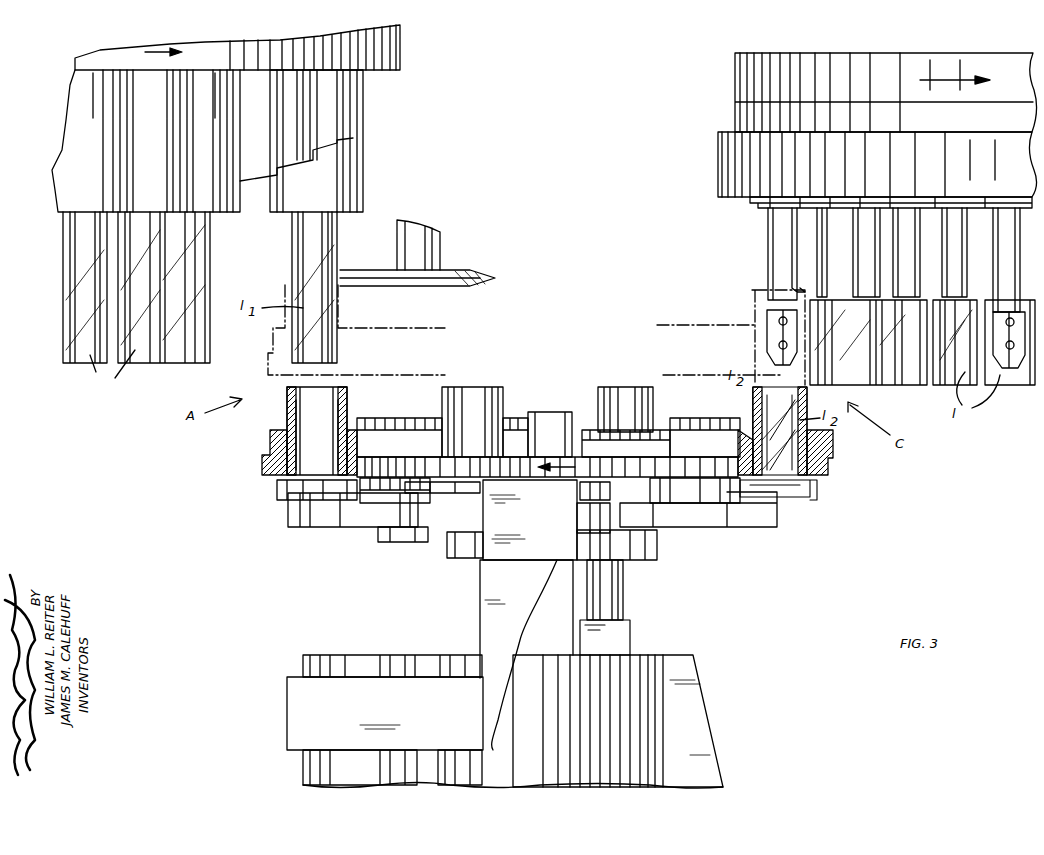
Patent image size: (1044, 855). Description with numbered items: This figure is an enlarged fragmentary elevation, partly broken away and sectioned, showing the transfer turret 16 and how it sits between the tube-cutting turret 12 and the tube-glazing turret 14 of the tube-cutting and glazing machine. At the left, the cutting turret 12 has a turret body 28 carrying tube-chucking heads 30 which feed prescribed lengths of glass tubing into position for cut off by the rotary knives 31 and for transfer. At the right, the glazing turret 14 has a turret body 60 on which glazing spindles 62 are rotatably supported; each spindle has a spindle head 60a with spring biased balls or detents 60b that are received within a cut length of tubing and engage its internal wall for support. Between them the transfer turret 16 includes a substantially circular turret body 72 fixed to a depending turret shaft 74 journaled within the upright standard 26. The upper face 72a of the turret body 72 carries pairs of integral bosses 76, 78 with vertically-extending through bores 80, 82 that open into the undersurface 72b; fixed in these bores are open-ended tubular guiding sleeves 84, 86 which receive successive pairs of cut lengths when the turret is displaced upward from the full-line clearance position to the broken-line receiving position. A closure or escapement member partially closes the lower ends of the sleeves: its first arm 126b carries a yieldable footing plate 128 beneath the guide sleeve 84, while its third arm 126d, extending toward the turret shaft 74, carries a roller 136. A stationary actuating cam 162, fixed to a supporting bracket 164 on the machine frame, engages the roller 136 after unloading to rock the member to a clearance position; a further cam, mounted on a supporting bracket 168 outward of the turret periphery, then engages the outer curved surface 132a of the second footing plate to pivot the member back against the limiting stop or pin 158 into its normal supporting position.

The tube-cutting turret 12 is at (227, 206).
The turret body 28 is at (405, 52).
The tube-chucking heads 30 is at (65, 192).
The rotary knives 31 is at (480, 280).
The tube-glazing turret 14 is at (340, 312).
The transfer turret 16 is at (525, 378).
The turret body 60 is at (735, 105).
The glazing spindles 62 is at (778, 285).
The spindle head 60a is at (770, 320).
The spring biased balls or detents 60b is at (780, 348).
The turret body 72 is at (257, 469).
The upper face 72a is at (700, 440).
The undersurface 72b is at (830, 488).
The turret shaft 74 is at (555, 417).
The boss 76 is at (262, 447).
The boss 78 is at (510, 443).
The through bore 80 is at (297, 472).
The through bore 82 is at (800, 455).
The tubular guiding sleeve 84 is at (347, 410).
The tubular guiding sleeve 86 is at (468, 393).
The footing plate 128 is at (457, 487).
The outer curved surface 132a is at (595, 482).
The limiting stop or pin 158 is at (600, 485).
The third arm 126d is at (585, 520).
The first arm 126b is at (447, 520).
The roller 136 is at (590, 546).
The closure or escapement actuating cam 162 is at (617, 576).
The supporting bracket 164 is at (620, 640).
The supporting bracket 168 is at (358, 695).
The upright standard 26 is at (655, 745).